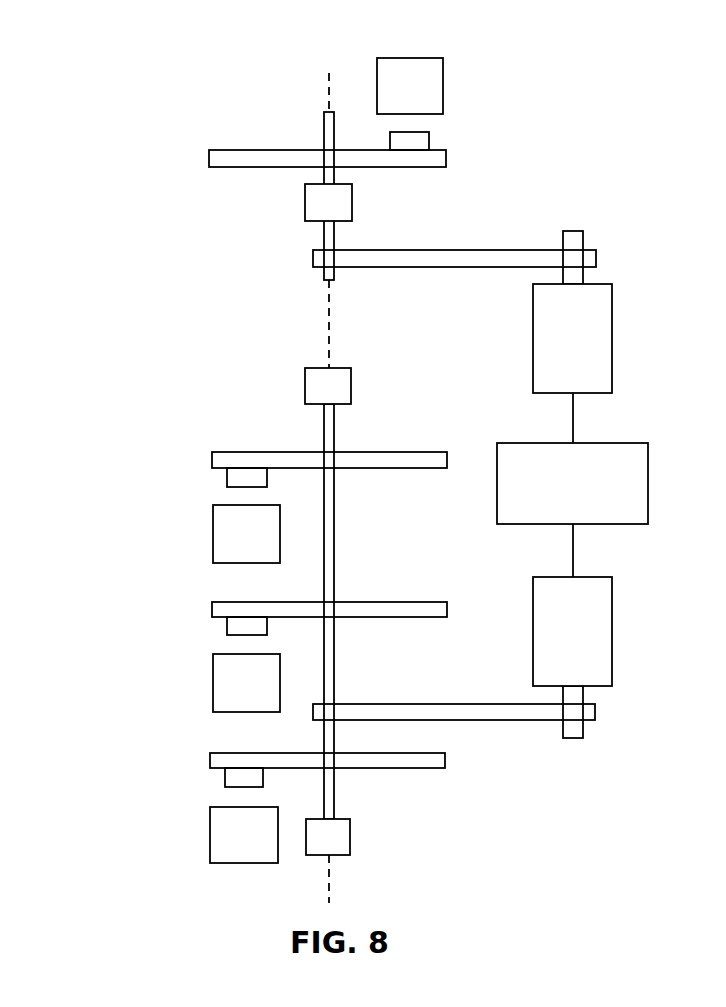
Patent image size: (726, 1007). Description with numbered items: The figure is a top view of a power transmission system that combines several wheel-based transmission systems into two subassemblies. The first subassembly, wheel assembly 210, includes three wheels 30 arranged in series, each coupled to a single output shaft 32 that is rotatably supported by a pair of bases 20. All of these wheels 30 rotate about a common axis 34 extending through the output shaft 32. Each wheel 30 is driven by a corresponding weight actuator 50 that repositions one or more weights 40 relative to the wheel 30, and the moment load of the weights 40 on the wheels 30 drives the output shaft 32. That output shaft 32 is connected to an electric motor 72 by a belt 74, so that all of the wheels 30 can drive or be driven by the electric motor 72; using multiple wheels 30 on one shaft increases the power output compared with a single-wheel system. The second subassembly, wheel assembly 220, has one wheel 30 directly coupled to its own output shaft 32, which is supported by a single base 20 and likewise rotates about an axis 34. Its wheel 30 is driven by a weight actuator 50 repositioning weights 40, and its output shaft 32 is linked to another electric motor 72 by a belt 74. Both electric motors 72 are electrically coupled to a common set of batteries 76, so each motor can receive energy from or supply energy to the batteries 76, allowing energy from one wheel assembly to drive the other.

The base 20 is at (352, 203).
The wheel 30 is at (446, 157).
The output shaft 32 is at (324, 128).
The axis 34 is at (327, 76).
The weight 40 is at (429, 140).
The weight actuator 50 is at (443, 83).
The electric motor 72 is at (612, 340).
The belt 74 is at (473, 257).
The batteries 76 is at (648, 482).
The wheel assembly 210 is at (152, 737).
The wheel assembly 220 is at (236, 213).